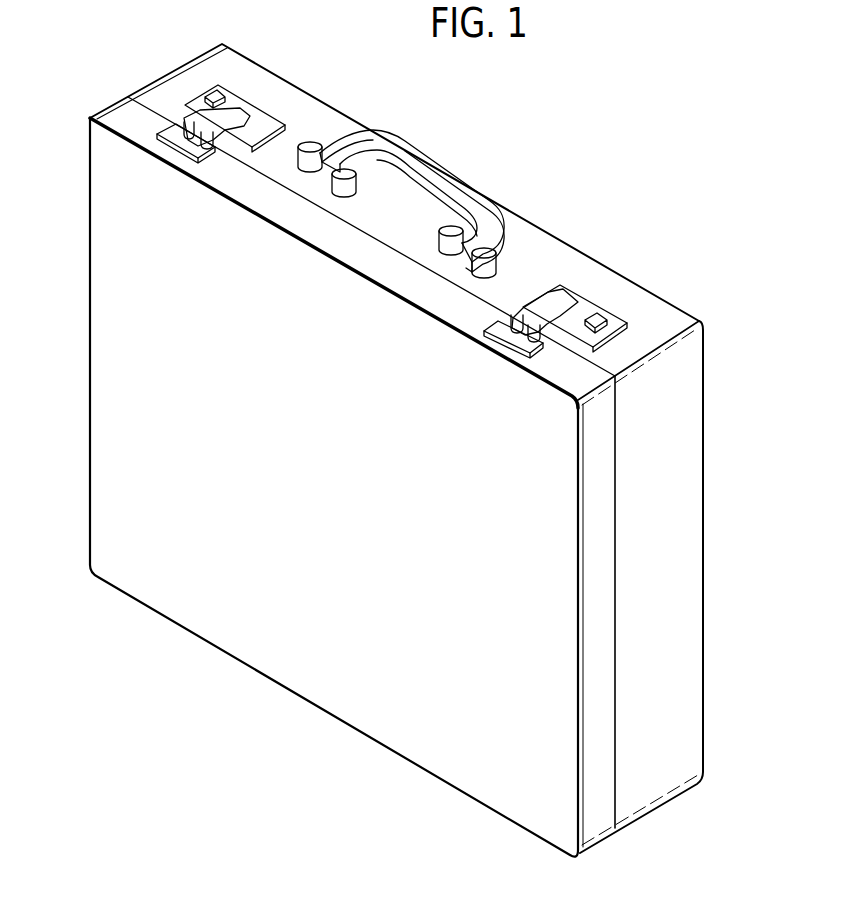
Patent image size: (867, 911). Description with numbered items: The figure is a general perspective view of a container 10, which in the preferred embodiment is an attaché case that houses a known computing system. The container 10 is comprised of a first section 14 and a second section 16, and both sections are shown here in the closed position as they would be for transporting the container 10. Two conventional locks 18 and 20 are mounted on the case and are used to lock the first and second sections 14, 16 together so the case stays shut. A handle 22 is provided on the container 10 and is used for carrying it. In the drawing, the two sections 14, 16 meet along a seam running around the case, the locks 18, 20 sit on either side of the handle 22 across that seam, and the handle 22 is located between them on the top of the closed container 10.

The container 10 is at (377, 429).
The first section 14 is at (137, 117).
The second section 16 is at (193, 88).
The lock 18 is at (227, 137).
The lock 20 is at (542, 313).
The handle 22 is at (487, 198).